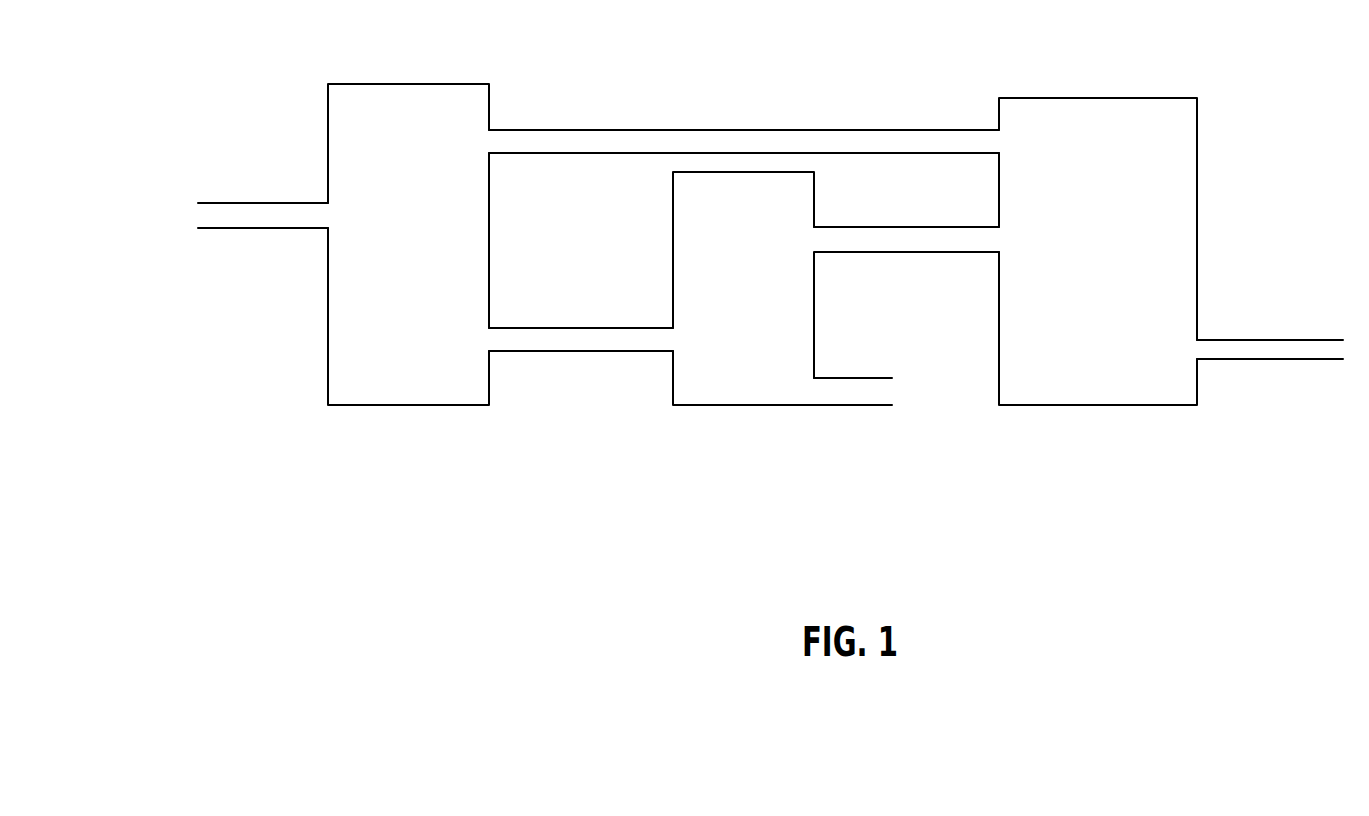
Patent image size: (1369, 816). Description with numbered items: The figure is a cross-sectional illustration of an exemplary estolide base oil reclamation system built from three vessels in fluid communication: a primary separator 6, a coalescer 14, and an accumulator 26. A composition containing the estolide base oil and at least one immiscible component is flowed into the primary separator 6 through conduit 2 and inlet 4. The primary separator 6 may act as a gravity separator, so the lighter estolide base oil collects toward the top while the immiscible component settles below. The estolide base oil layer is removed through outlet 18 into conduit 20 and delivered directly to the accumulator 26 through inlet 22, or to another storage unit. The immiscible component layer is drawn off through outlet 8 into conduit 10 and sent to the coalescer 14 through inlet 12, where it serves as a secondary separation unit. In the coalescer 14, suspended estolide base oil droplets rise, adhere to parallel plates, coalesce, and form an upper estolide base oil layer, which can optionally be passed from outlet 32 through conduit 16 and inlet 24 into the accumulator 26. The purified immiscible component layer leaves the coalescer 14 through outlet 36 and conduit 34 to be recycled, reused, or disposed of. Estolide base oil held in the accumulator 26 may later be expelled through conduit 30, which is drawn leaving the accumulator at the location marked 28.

The conduit 2 is at (237, 228).
The inlet 4 is at (311, 215).
The primary separator 6 is at (365, 405).
The outlet 8 is at (503, 335).
The conduit 10 is at (563, 351).
The inlet 12 is at (652, 338).
The coalescer 14 is at (715, 406).
The conduit 16 is at (872, 252).
The outlet 18 is at (503, 138).
The conduit 20 is at (743, 130).
The inlet 22 is at (968, 138).
The inlet 24 is at (987, 237).
The accumulator 26 is at (1102, 406).
The outlet opening 28 is at (1212, 352).
The conduit 30 is at (1260, 359).
The outlet 32 is at (825, 238).
The conduit 34 is at (875, 406).
The outlet 36 is at (831, 398).